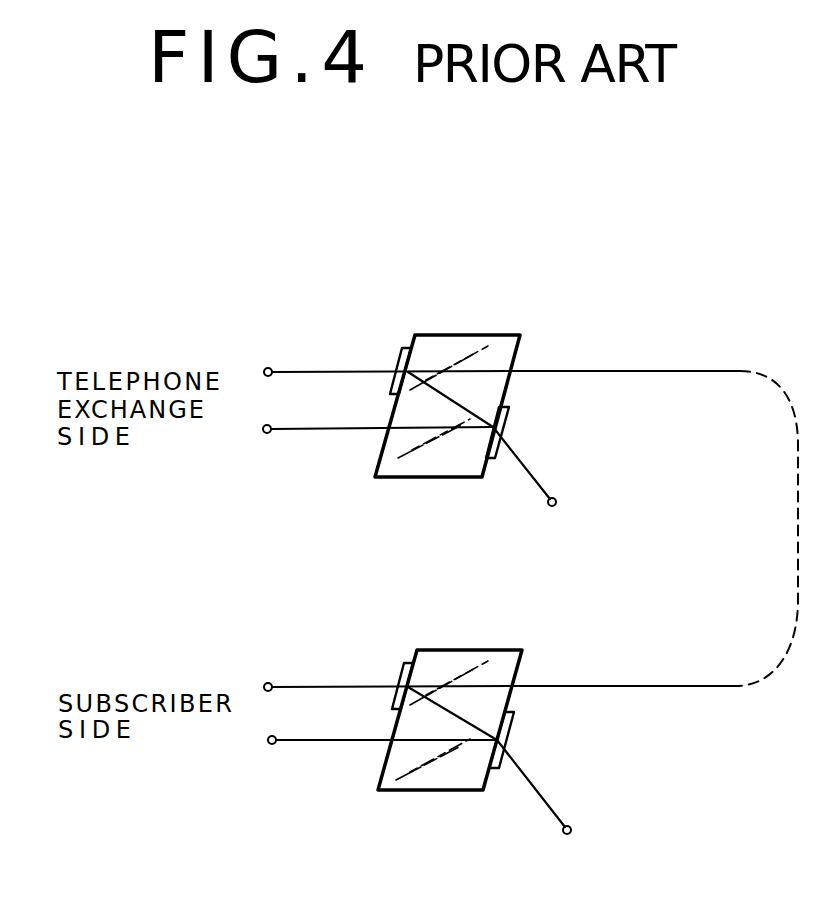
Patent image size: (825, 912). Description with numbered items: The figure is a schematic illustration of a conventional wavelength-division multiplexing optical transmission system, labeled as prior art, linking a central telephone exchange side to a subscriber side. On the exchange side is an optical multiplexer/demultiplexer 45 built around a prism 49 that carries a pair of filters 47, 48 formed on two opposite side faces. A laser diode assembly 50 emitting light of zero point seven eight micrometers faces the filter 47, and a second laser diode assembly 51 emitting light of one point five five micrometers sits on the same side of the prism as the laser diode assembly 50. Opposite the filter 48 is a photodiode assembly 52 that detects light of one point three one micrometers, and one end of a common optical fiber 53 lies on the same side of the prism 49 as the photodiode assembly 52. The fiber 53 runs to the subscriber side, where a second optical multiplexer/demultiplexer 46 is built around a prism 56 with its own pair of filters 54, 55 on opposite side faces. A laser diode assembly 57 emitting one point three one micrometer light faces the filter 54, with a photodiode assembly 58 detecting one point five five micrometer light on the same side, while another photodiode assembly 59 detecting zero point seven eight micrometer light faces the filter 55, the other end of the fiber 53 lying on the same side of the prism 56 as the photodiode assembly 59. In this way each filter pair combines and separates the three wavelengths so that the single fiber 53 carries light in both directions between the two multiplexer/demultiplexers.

The optical multiplexer/demultiplexer 45 is at (461, 323).
The optical multiplexer/demultiplexer 46 is at (460, 637).
The filter 47 is at (405, 348).
The filter 48 is at (509, 417).
The prism 49 is at (507, 343).
The laser diode assembly 50 is at (268, 367).
The laser diode assembly 51 is at (267, 434).
The photodiode assembly 52 is at (556, 503).
The common optical fiber 53 is at (706, 370).
The filter 54 is at (404, 664).
The filter 55 is at (514, 723).
The prism 56 is at (513, 652).
The laser diode assembly 57 is at (268, 682).
The photodiode assembly 58 is at (272, 746).
The photodiode assembly 59 is at (572, 832).